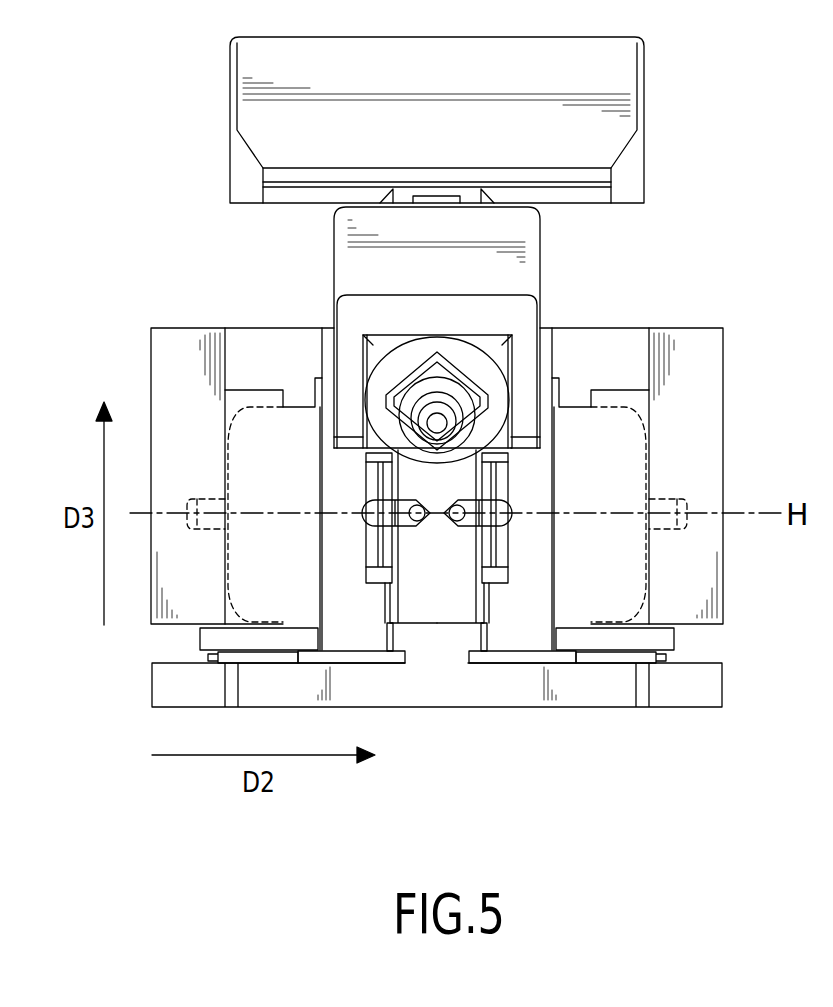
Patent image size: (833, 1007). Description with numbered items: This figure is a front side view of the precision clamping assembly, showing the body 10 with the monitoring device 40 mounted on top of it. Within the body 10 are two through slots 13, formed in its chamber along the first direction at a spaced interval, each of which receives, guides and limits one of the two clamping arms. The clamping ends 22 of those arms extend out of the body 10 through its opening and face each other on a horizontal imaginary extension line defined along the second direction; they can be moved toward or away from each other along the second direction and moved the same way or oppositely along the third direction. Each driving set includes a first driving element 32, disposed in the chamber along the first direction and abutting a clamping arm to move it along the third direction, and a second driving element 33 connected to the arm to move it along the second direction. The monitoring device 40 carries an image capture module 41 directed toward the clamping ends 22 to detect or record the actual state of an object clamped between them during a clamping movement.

The body 10 is at (170, 322).
The through slots 13 is at (286, 400).
The clamping end 22 is at (422, 519).
The first driving element 32 is at (383, 657).
The second driving element 33 is at (377, 542).
The monitoring device 40 is at (566, 251).
The image capture module 41 is at (432, 408).